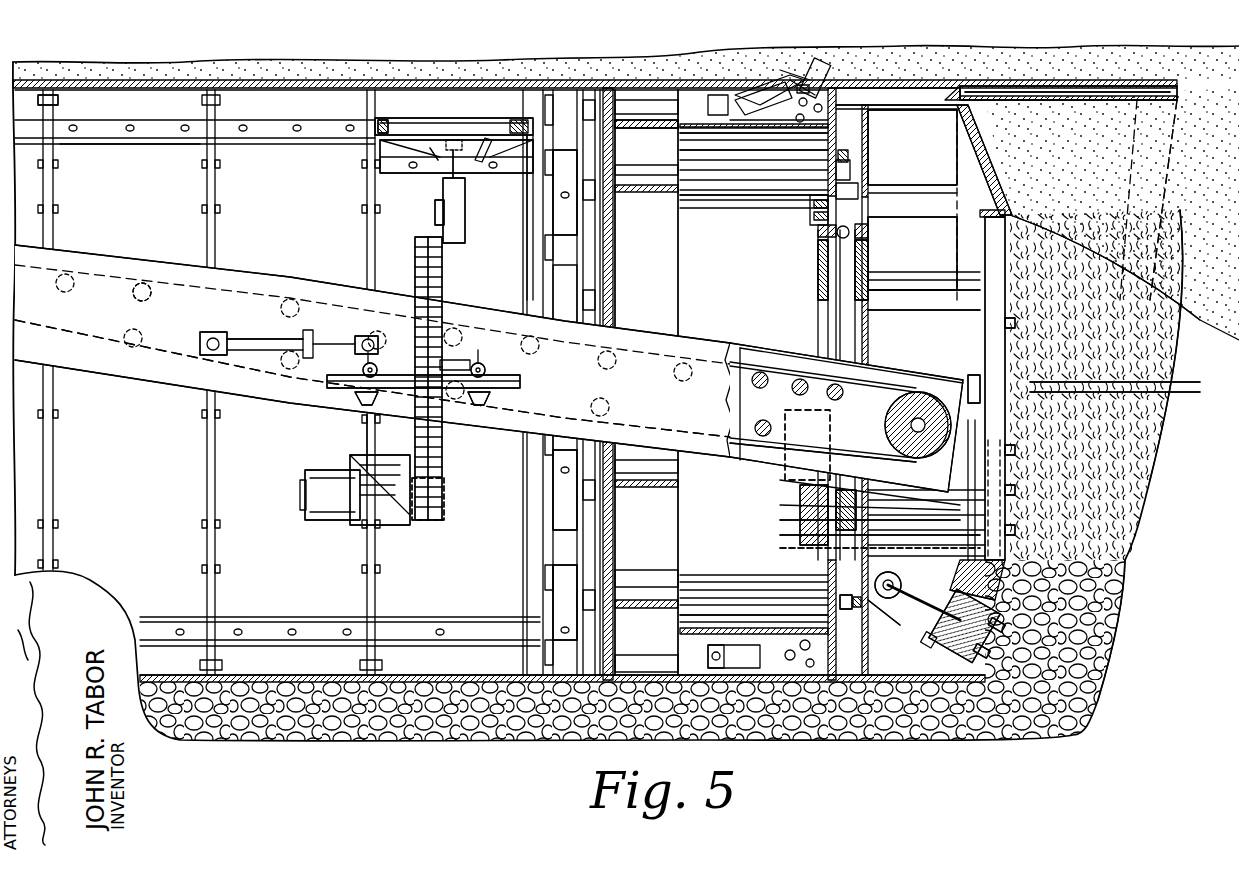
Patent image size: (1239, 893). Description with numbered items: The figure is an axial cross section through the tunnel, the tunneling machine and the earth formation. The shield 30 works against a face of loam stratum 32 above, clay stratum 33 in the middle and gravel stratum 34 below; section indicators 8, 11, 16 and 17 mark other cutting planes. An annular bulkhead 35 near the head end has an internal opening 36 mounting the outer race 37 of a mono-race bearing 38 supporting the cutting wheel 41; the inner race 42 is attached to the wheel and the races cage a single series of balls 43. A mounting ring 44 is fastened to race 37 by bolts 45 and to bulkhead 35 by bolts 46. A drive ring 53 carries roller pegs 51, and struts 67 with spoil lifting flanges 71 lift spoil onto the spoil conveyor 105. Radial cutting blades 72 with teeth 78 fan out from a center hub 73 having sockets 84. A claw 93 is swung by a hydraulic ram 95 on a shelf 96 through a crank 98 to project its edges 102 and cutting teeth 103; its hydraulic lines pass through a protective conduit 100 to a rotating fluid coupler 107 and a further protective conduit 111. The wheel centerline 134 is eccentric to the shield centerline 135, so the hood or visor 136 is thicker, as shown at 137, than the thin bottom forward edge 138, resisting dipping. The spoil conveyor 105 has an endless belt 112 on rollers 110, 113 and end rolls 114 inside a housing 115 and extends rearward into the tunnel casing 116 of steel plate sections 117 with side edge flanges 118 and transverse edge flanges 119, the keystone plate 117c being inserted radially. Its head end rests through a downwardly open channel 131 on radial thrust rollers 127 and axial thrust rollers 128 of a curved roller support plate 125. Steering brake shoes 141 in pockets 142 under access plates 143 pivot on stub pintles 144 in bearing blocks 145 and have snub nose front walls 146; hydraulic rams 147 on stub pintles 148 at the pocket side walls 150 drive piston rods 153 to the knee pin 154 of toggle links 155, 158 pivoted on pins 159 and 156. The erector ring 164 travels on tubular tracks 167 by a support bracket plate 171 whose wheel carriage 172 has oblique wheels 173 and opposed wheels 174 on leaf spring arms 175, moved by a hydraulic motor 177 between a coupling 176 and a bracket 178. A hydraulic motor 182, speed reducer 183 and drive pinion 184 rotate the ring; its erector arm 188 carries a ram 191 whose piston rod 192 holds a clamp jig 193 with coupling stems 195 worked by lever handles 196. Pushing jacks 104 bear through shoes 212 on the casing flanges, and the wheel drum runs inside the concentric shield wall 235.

The section line 8- 8 is at (525, 49).
The section line 11- 11 is at (280, 49).
The section line 16- 16 is at (669, 138).
The section line 17- 17 is at (862, 337).
The shield 30 is at (1003, 84).
The loam stratum 32 is at (1190, 155).
The clay stratum 33 is at (1130, 278).
The gravel stratum 34 is at (1112, 610).
The annular bulkhead 35 is at (828, 188).
The internal opening 36 is at (815, 282).
The outer race 37 is at (844, 226).
The circular anti-friction bearing 38 is at (818, 232).
The cutting wheel 41 is at (998, 168).
The inner race 42 is at (868, 253).
The balls 43 is at (868, 232).
The mounting ring 44 is at (814, 218).
The bolts 45 is at (810, 212).
The bolts 46 is at (814, 204).
The roller pegs 51 is at (846, 185).
The drive ring 53 is at (852, 180).
The spoil lifting struts 67 is at (912, 200).
The spoil lifting flanges 71 is at (945, 280).
The radial cutting blades 72 is at (1005, 322).
The center hub 73 is at (1000, 352).
The teeth 78 is at (1005, 225).
The socket 84 is at (960, 380).
The claw 93 is at (945, 642).
The hydraulic motor ram 95 is at (900, 582).
The shelf 96 is at (885, 618).
The crank 98 is at (925, 605).
The protective conduit 100 is at (975, 537).
The edges 102 is at (1012, 604).
The cutting teeth 103 is at (975, 643).
The pushing jacks 104 is at (642, 110).
The spoil conveyor 105 is at (763, 337).
The rotating fluid coupler 107 is at (968, 378).
The rollers 110 is at (140, 347).
The protective conduit 111 is at (965, 500).
The endless belt 112 is at (118, 270).
The rollers 113 is at (150, 298).
The end rolls 114 is at (925, 455).
The housing 115 is at (325, 300).
The tunnel casing 116 is at (130, 80).
The steel plate sections 117 is at (182, 88).
The keystone plate 117c is at (450, 118).
The side edge flanges 118 is at (52, 100).
The transverse edge flanges 119 is at (121, 144).
The curved roller support plate 125 is at (808, 558).
The radial thrust load bearing rollers 127 is at (808, 530).
The axial thrust load bearing rollers 128 is at (836, 535).
The downwardly open channel 131 is at (792, 492).
The centerline of the cutting wheel 134 is at (1180, 394).
The centerline of the shield 135 is at (1180, 380).
The overhanging hood or visor 136 is at (1172, 84).
The thickened top portion 137 is at (1088, 90).
The bottom forward edge 138 is at (962, 690).
The steering brake shoes 141 is at (792, 72).
The pockets 142 is at (680, 104).
The removable access plate 143 is at (698, 133).
The stub pintles 144 is at (760, 80).
The bearing blocks 145 is at (722, 98).
The snub nose front wall 146 is at (830, 78).
The hydraulic motor rams 147 is at (760, 110).
The stub pintles 148 is at (708, 165).
The side walls 150 is at (708, 650).
The extensible piston rod 153 is at (768, 118).
The knee pin 154 is at (797, 88).
The toggle joint link 155 is at (830, 68).
The pin 156 is at (800, 113).
The toggle joint link 158 is at (800, 105).
The pin 159 is at (818, 64).
The erector ring 164 is at (415, 262).
The tubular tracks 167 is at (490, 388).
The support bracket plate 171 is at (415, 279).
The wheel carriage 172 is at (470, 362).
The obliquely related rollers 173 is at (366, 368).
The opposed wheels 174 is at (365, 405).
The leaf spring arms 175 is at (403, 412).
The coupling 176 is at (402, 355).
The hydraulic ram 177 is at (258, 339).
The bracket 178 is at (213, 332).
The hydraulic motor 182 is at (330, 520).
The speed reducer 183 is at (390, 520).
The drive pinion 184 is at (445, 483).
The erector arm 188 is at (435, 215).
The hydraulic ram 191 is at (465, 215).
The extensible piston rod 192 is at (457, 162).
The casing segment plate clamp jig 193 is at (478, 130).
The coupling stems 195 is at (380, 120).
The lever handles 196 is at (436, 162).
The shoes 212 is at (563, 210).
The concentric wall 235 is at (895, 110).